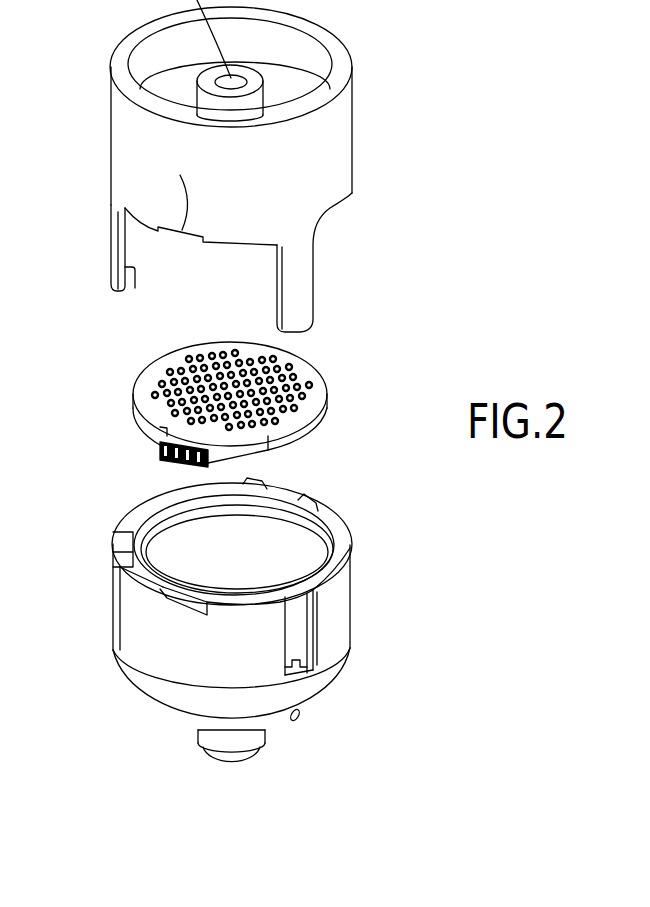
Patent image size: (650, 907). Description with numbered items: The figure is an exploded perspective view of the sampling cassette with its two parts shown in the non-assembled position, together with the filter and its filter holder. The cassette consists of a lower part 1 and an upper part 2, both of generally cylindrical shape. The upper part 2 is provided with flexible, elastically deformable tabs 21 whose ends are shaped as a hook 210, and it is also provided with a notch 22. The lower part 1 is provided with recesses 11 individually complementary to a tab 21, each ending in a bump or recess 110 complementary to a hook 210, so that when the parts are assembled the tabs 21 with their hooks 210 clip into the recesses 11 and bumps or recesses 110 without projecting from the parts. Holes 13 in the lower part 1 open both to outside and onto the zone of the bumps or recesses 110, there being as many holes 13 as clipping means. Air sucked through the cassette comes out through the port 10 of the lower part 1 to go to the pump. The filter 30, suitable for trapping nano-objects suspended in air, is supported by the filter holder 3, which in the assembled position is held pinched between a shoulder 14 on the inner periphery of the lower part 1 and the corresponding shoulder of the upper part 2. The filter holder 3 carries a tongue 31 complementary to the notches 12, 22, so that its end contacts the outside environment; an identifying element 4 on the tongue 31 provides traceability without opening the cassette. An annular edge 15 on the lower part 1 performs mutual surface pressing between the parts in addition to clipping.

The lower part 1 is at (350, 615).
The port 10 is at (250, 760).
The recess 11 is at (297, 635).
The bump or recess 110 is at (302, 690).
The notch 12 is at (177, 607).
The hole 13 is at (298, 719).
The shoulder 14 is at (322, 530).
The annular edge 15 is at (333, 560).
The upper part 2 is at (352, 148).
The flexible tab 21 is at (111, 229).
The hook 210 is at (133, 290).
The notch 22 is at (180, 175).
The filter holder 3 is at (318, 425).
The filter 30 is at (304, 393).
The tongue 31 is at (243, 448).
The identifying element 4 is at (175, 457).